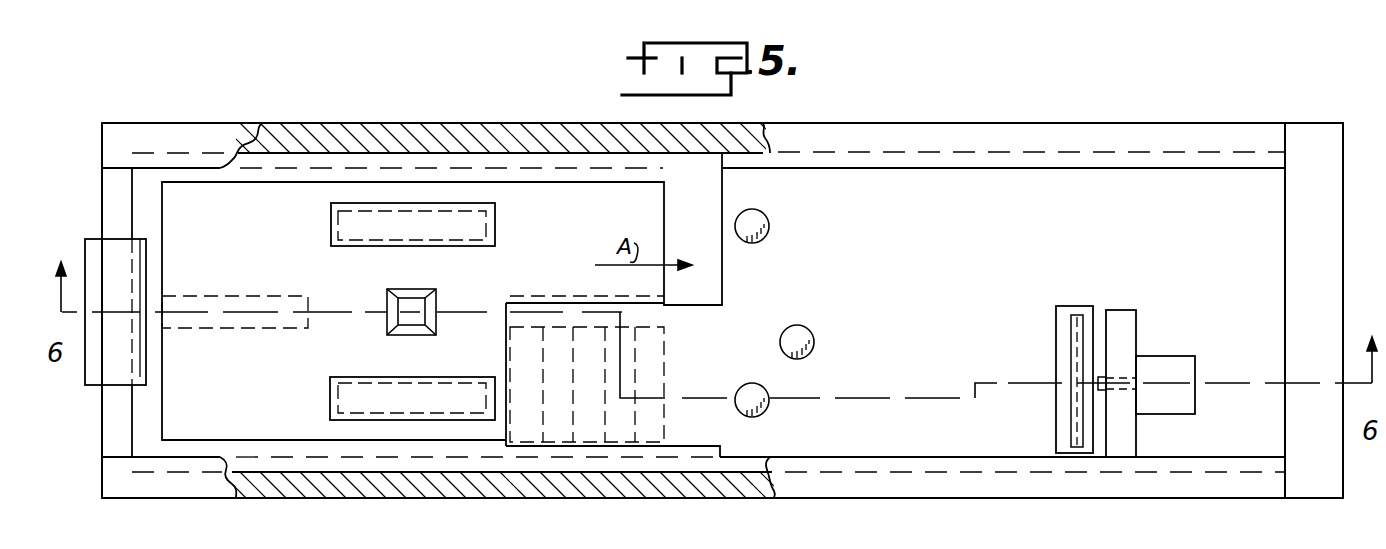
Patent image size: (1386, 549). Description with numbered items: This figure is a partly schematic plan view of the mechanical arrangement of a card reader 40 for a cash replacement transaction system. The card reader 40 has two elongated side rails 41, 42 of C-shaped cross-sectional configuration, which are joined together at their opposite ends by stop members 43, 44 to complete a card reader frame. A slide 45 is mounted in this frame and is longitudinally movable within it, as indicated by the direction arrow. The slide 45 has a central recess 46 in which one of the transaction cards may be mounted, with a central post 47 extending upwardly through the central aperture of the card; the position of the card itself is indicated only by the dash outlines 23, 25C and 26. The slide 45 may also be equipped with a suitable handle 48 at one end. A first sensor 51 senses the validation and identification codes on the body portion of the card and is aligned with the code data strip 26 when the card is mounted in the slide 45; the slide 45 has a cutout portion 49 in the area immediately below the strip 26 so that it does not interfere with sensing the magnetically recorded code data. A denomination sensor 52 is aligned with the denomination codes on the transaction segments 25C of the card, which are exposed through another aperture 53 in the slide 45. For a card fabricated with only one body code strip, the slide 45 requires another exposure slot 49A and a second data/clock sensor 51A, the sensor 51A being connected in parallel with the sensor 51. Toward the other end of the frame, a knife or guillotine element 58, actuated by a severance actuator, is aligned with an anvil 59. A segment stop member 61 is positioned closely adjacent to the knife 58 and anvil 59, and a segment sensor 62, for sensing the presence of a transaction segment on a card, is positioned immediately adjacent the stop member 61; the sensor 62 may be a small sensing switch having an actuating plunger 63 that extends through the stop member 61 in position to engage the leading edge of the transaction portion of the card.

The dash outline 23 is at (232, 300).
The transaction segment 25C is at (664, 362).
The code data strip 26 is at (363, 378).
The card reader 40 is at (528, 114).
The side rail 41 is at (204, 128).
The side rail 42 is at (812, 490).
The stop member 43 is at (104, 203).
The stop member 44 is at (1338, 259).
The slide 45 is at (572, 197).
The central recess 46 is at (426, 186).
The central post 47 is at (437, 322).
The handle 48 is at (99, 374).
The cutout portion 49 is at (337, 398).
The exposure slot 49A is at (476, 240).
The first sensor 51 is at (766, 409).
The second data/clock sensor 51A is at (770, 224).
The denomination sensor 52 is at (815, 338).
The aperture 53 is at (511, 364).
The knife 58 is at (1070, 328).
The anvil 59 is at (1060, 407).
The segment stop member 61 is at (1131, 321).
The segment sensor 62 is at (1178, 364).
The actuating plunger 63 is at (1102, 380).